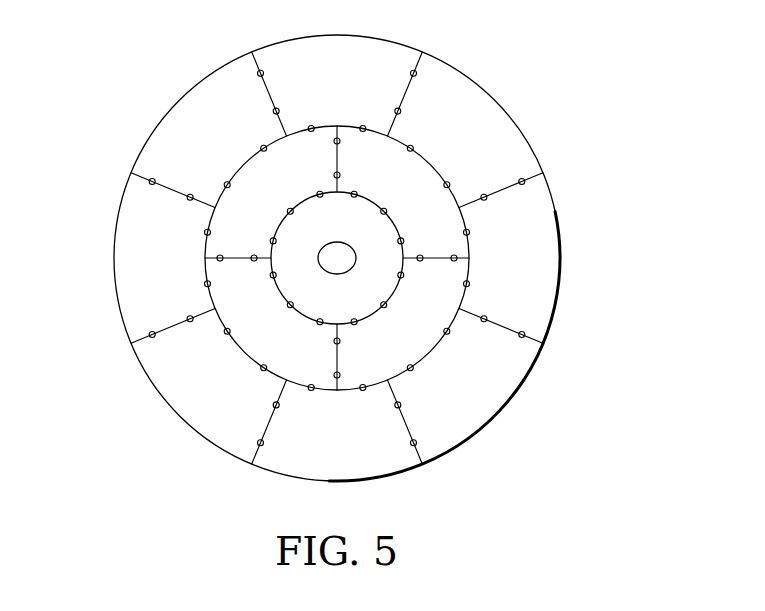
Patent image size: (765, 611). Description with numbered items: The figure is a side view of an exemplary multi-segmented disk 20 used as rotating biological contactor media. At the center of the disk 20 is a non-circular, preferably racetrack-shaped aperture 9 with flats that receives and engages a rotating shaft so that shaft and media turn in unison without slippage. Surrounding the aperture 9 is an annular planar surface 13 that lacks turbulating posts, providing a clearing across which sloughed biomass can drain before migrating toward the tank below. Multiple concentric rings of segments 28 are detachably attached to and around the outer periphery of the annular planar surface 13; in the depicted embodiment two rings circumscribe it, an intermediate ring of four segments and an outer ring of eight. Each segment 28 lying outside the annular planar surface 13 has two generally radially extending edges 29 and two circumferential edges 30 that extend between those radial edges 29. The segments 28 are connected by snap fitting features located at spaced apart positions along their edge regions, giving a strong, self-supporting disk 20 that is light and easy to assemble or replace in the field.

The disk 20 is at (493, 100).
The annular planar surface 13 is at (375, 228).
The segments 28 is at (518, 258).
The radially extending edges 29 is at (171, 325).
The circumferential edges 30 is at (555, 322).
The aperture 9 is at (350, 269).